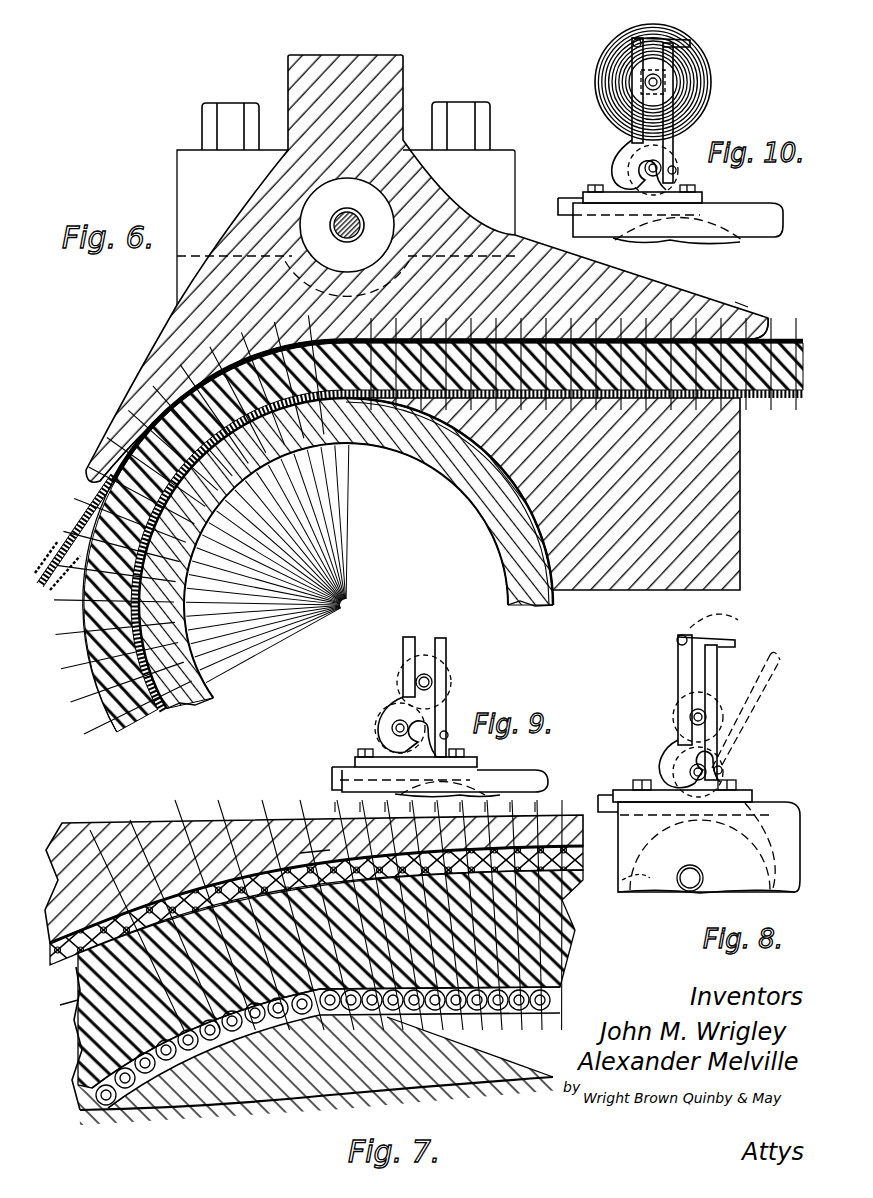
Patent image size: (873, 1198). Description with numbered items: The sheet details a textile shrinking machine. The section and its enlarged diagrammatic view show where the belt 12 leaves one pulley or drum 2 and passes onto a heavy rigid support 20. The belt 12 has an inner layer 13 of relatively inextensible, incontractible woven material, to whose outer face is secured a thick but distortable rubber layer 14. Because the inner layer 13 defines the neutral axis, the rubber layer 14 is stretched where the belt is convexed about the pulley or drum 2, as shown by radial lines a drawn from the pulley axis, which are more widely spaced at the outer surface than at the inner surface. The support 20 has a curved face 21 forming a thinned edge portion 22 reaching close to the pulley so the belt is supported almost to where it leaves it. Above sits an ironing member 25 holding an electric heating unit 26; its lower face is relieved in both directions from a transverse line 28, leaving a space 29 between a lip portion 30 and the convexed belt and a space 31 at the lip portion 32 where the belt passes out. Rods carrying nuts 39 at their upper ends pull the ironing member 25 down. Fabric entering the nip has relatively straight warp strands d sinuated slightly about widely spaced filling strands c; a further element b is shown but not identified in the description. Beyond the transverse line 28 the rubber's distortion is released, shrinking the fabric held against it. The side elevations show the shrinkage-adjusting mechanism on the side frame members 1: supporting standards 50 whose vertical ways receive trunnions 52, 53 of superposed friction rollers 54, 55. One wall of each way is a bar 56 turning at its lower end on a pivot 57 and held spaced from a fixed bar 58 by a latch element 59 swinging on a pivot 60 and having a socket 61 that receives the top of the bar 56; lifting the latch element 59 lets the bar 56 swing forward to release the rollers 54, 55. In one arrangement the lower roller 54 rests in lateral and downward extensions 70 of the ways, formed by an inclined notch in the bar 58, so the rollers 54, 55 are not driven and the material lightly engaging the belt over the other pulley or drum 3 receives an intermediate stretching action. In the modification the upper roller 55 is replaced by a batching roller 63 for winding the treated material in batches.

In FIG. 10, the side frame members 1 is at (770, 215).
In FIG. 8, the side frame members 1 is at (788, 800).
In FIG. 6, the pulley or drum 2 is at (512, 535).
In FIG. 10, the pulley or drum 3 is at (656, 242).
In FIG. 8, the pulley or drum 3 is at (625, 880).
In FIG. 10, the belt 12 is at (560, 200).
In FIG. 9, the belt 12 is at (332, 770).
In FIG. 8, the belt 12 is at (610, 800).
In FIG. 7, the inner layer 13 is at (572, 992).
In FIG. 7, the rubber layer 14 is at (546, 958).
In FIG. 6, the support 20 is at (720, 500).
In FIG. 6, the face 21 is at (546, 568).
In FIG. 6, the thinned edge portion 22 is at (410, 445).
In FIG. 6, the ironing member 25 is at (178, 322).
In FIG. 7, the ironing member 25 is at (92, 823).
In FIG. 6, the electric heating unit 26 is at (352, 222).
In FIG. 6, the transverse line 28 is at (300, 332).
In FIG. 7, the transverse line 28 is at (325, 852).
In FIG. 6, the space 29 is at (112, 484).
In FIG. 6, the lip portion 30 is at (122, 412).
In FIG. 6, the space 31 is at (740, 300).
In FIG. 6, the lip portion 32 is at (769, 318).
In FIG. 6, the nuts 39 is at (232, 100).
In FIG. 10, the supporting standards 50 is at (625, 190).
In FIG. 8, the supporting standards 50 is at (694, 795).
In FIG. 8, the trunnion 52 is at (688, 772).
In FIG. 8, the trunnion 53 is at (690, 717).
In FIG. 9, the friction roller 54 is at (378, 728).
In FIG. 10, the friction roller 55 is at (630, 80).
In FIG. 9, the friction roller 55 is at (426, 655).
In FIG. 9, the bar 56 is at (447, 656).
In FIG. 8, the bar 56 is at (717, 682).
In FIG. 10, the pivot 57 is at (676, 168).
In FIG. 8, the pivot 57 is at (723, 770).
In FIG. 8, the bar 58 is at (678, 680).
In FIG. 10, the latch element 59 is at (681, 38).
In FIG. 8, the latch element 59 is at (735, 643).
In FIG. 10, the pivot 60 is at (632, 43).
In FIG. 8, the pivot 60 is at (677, 640).
In FIG. 8, the socket 61 is at (718, 630).
In FIG. 10, the batching roller 63 is at (660, 68).
In FIG. 9, the extensions 70 is at (405, 706).
In FIG. 6, the radial lines a is at (415, 524).
In FIG. 7, the radial lines a is at (326, 913).
In FIG. 7, the lower layer b is at (160, 1105).
In FIG. 7, the filling strands c is at (68, 922).
In FIG. 7, the warp strands d is at (74, 1000).